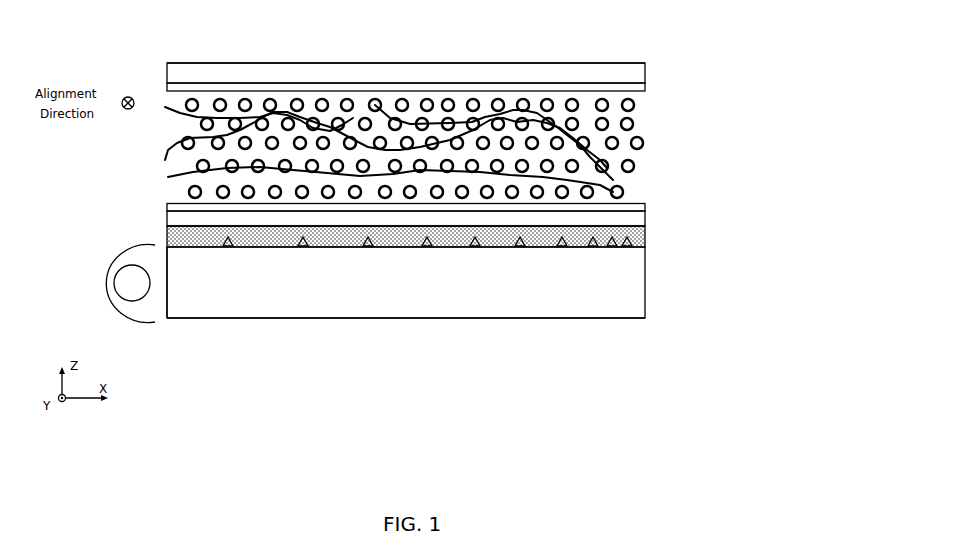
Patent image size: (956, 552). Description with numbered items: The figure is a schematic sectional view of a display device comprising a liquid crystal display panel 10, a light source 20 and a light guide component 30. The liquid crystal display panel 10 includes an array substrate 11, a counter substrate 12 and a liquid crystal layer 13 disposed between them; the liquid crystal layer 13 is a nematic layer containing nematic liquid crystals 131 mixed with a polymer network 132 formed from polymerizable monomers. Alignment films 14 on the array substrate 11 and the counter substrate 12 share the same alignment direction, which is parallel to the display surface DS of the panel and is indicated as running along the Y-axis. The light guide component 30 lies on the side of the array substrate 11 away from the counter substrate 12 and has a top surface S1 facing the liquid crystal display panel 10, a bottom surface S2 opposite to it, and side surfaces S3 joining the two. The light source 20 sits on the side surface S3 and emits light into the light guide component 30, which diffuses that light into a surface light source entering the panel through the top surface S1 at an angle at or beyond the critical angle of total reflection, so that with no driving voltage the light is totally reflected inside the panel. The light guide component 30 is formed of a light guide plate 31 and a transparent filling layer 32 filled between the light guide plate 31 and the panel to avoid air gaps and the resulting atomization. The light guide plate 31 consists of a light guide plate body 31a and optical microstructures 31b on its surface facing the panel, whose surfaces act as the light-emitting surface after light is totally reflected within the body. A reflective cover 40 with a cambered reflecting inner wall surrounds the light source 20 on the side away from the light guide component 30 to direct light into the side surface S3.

The display surface DS is at (232, 63).
The liquid crystal display panel 10 is at (728, 57).
The array substrate 11 is at (645, 218).
The counter substrate 12 is at (645, 73).
The liquid crystal layer 13 is at (685, 105).
The nematic liquid crystals 131 is at (633, 105).
The polymer network 132 is at (617, 162).
The alignment films 14 is at (645, 87).
The light source 20 is at (128, 280).
The light guide component 30 is at (462, 384).
The light guide plate 31 is at (498, 357).
The light guide plate body 31a is at (453, 290).
The optical microstructures 31b is at (518, 247).
The transparent filling layer 32 is at (390, 240).
The reflective cover 40 is at (90, 268).
The top surface S1 is at (185, 226).
The bottom surface S2 is at (238, 319).
The side surface S3 is at (167, 295).